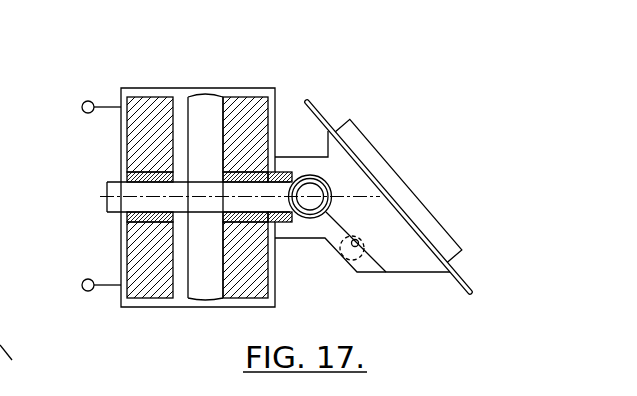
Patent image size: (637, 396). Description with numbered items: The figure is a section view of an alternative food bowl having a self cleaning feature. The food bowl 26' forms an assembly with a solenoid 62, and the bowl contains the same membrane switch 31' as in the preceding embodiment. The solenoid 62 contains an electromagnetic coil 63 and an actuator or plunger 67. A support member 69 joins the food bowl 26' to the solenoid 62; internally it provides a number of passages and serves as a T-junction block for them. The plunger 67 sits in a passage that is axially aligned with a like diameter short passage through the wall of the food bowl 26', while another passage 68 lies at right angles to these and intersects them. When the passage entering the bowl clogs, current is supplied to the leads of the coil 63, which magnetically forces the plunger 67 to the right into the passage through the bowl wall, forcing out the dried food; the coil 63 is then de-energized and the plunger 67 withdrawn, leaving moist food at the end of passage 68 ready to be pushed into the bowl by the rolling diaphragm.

The solenoid 62 is at (182, 59).
The electromagnetic coil 63 is at (114, 147).
The plunger 67 is at (210, 212).
The passage 68 is at (310, 218).
The support member 69 is at (297, 157).
The food bowl 26' is at (388, 185).
The membrane switch 31' is at (362, 261).